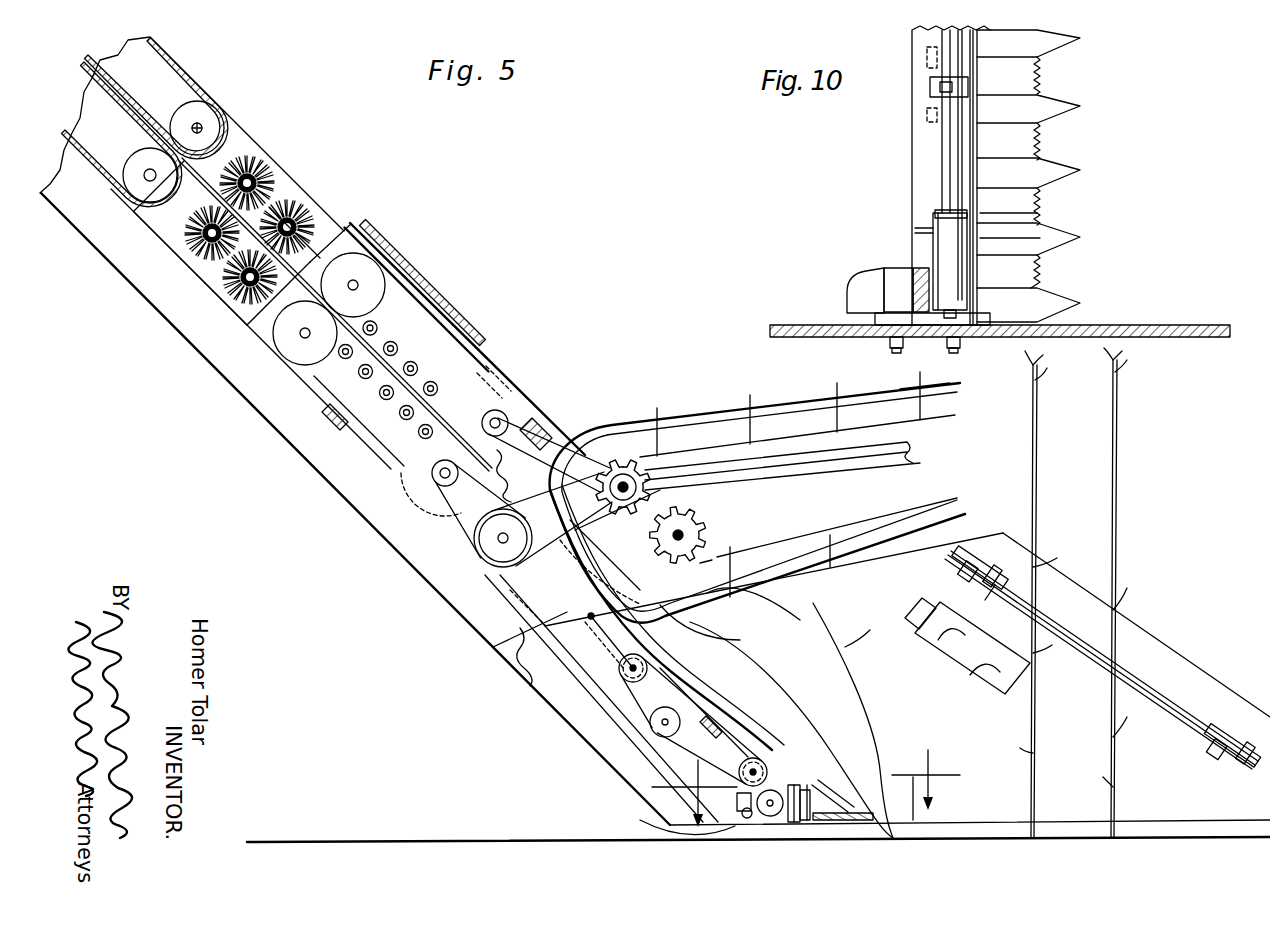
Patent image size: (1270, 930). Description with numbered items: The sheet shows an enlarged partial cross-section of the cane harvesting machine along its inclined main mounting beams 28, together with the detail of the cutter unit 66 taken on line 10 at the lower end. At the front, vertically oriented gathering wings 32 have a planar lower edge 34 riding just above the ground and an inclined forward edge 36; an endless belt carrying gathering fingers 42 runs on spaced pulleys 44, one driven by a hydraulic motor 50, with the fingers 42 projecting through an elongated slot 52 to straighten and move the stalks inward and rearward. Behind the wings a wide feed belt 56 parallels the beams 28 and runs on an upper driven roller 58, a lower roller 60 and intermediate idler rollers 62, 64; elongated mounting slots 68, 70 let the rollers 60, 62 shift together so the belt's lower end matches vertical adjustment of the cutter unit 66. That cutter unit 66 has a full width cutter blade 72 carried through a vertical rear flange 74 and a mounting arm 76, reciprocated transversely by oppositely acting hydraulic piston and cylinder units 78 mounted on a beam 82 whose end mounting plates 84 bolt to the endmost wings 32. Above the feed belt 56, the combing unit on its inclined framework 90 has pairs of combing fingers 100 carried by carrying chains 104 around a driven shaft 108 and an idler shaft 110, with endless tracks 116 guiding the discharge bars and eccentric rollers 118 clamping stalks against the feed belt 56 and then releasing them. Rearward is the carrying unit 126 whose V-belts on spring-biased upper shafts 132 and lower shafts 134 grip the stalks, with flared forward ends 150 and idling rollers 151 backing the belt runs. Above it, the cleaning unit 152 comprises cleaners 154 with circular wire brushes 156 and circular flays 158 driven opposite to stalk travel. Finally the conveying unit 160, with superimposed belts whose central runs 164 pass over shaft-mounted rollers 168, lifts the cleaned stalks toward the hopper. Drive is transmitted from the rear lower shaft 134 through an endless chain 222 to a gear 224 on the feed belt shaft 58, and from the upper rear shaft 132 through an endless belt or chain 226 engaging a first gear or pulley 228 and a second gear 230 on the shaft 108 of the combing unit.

In FIG. 5, the line 10— 10 is at (807, 788).
In FIG. 5, the main mounting beams 28 is at (530, 684).
In FIG. 5, the gathering wings 32 is at (1141, 615).
In FIG. 10, the gathering wings 32 is at (1112, 323).
In FIG. 5, the lower edge 34 is at (1083, 818).
In FIG. 5, the inclined forward edge 36 is at (1180, 648).
In FIG. 5, the gathering fingers 42 is at (970, 567).
In FIG. 5, the pulleys 44 is at (1203, 750).
In FIG. 5, the hydraulic motor 50 is at (970, 653).
In FIG. 5, the elongated slot 52 is at (1157, 690).
In FIG. 5, the feed belt 56 is at (570, 655).
In FIG. 10, the feed belt 56 is at (863, 278).
In FIG. 5, the upper driven roller 58 is at (472, 559).
In FIG. 5, the lower roller 60 is at (762, 755).
In FIG. 10, the lower roller 60 is at (900, 282).
In FIG. 5, the idler roller 62 is at (623, 675).
In FIG. 5, the idler roller 64 is at (657, 728).
In FIG. 5, the cutter unit 66 is at (829, 800).
In FIG. 10, the cutter unit 66 is at (1090, 89).
In FIG. 5, the elongated mounting slots 68 is at (733, 727).
In FIG. 10, the elongated mounting slots 68 is at (893, 348).
In FIG. 5, the elongated mounting slots 70 is at (594, 616).
In FIG. 5, the cutter blade 72 is at (843, 813).
In FIG. 10, the cutter blade 72 is at (1023, 211).
In FIG. 5, the vertical rear flange 74 is at (817, 800).
In FIG. 10, the vertical rear flange 74 is at (978, 142).
In FIG. 5, the mounting arm 76 is at (797, 787).
In FIG. 10, the mounting arm 76 is at (968, 84).
In FIG. 5, the hydraulic piston and cylinder units 78 is at (774, 789).
In FIG. 10, the hydraulic piston and cylinder units 78 is at (950, 250).
In FIG. 5, the beam 82 is at (672, 817).
In FIG. 10, the beam 82 is at (925, 163).
In FIG. 5, the mounting plates 84 is at (738, 797).
In FIG. 10, the mounting plates 84 is at (980, 325).
In FIG. 5, the framework 90 is at (879, 481).
In FIG. 5, the combing fingers 100 is at (840, 415).
In FIG. 5, the carrying chains 104 is at (783, 535).
In FIG. 5, the driven shaft 108 is at (623, 482).
In FIG. 5, the idler shaft 110 is at (682, 532).
In FIG. 5, the endless track 116 is at (705, 408).
In FIG. 5, the eccentric roller 118 is at (612, 582).
In FIG. 5, the carrying unit 126 is at (470, 326).
In FIG. 5, the upper pulley mounting shafts 132 is at (357, 283).
In FIG. 5, the lower pulley mounting shafts 134 is at (303, 336).
In FIG. 5, the outwardly flared forward ends 150 is at (560, 420).
In FIG. 5, the idling rollers 151 is at (421, 362).
In FIG. 5, the cleaning unit 152 is at (299, 184).
In FIG. 5, the cleaners 154 is at (327, 224).
In FIG. 5, the circular wire brushes 156 is at (312, 206).
In FIG. 5, the circular flays 158 is at (263, 156).
In FIG. 5, the final conveying unit 160 is at (188, 66).
In FIG. 5, the central runs 164 is at (130, 118).
In FIG. 5, the shaft-mounted rollers 168 is at (213, 121).
In FIG. 5, the endless chain 222 is at (455, 536).
In FIG. 5, the gear 224 is at (497, 552).
In FIG. 5, the endless belt or chain 226 is at (585, 450).
In FIG. 5, the first gear or pulley 228 is at (500, 412).
In FIG. 5, the second gear 230 is at (667, 480).